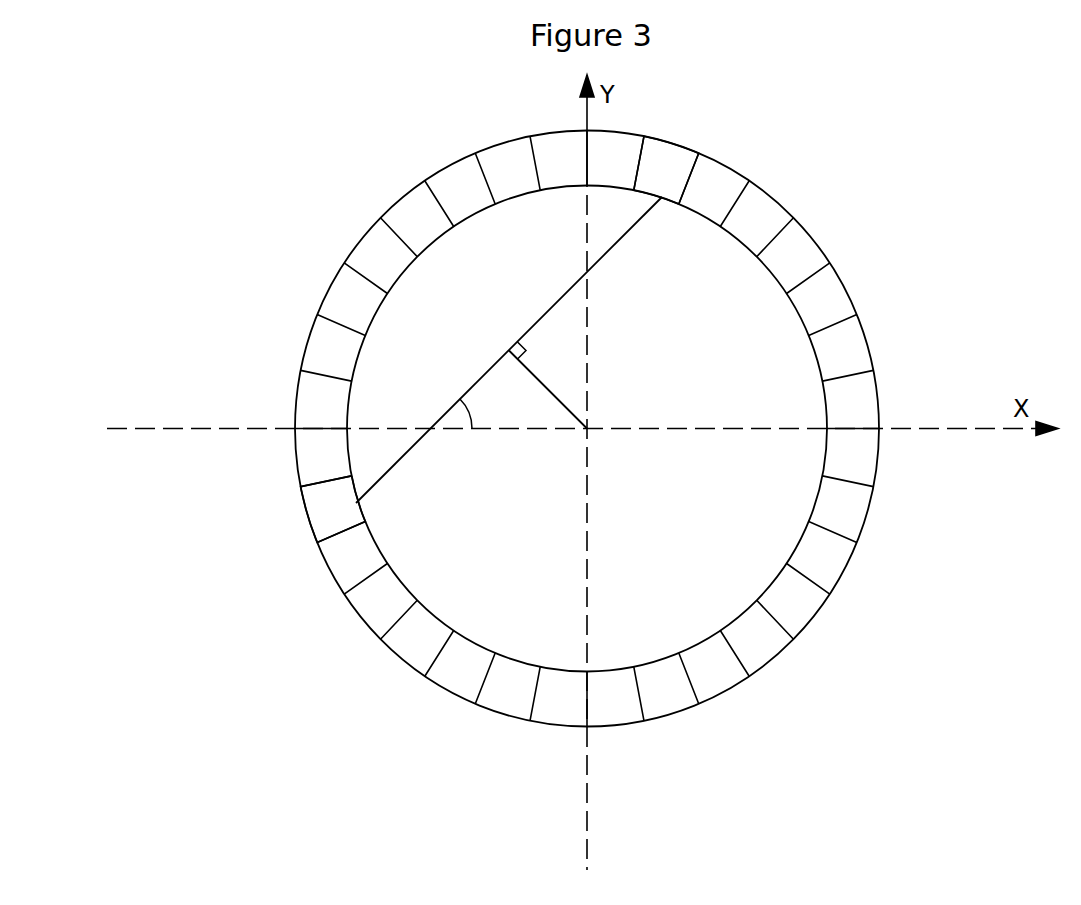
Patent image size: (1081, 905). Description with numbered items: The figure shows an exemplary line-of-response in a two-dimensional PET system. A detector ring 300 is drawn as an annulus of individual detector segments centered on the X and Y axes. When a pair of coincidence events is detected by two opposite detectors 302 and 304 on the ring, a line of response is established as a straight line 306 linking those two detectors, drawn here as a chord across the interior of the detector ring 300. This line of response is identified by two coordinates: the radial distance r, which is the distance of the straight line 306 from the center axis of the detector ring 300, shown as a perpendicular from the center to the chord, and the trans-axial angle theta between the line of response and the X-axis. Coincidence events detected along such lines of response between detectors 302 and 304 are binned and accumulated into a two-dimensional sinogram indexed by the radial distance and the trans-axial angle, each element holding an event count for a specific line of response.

The detector ring 300 is at (824, 138).
The detector 302 is at (337, 523).
The detector 304 is at (677, 167).
The straight line 306 is at (615, 242).